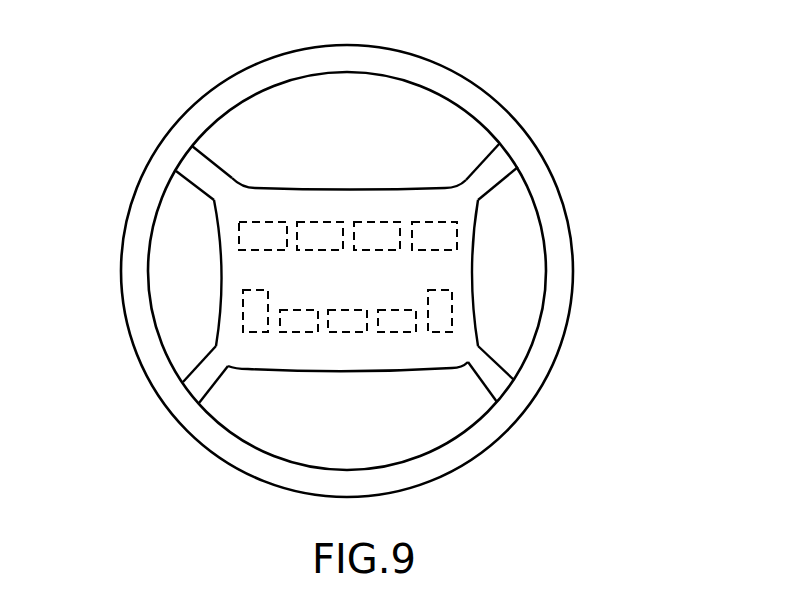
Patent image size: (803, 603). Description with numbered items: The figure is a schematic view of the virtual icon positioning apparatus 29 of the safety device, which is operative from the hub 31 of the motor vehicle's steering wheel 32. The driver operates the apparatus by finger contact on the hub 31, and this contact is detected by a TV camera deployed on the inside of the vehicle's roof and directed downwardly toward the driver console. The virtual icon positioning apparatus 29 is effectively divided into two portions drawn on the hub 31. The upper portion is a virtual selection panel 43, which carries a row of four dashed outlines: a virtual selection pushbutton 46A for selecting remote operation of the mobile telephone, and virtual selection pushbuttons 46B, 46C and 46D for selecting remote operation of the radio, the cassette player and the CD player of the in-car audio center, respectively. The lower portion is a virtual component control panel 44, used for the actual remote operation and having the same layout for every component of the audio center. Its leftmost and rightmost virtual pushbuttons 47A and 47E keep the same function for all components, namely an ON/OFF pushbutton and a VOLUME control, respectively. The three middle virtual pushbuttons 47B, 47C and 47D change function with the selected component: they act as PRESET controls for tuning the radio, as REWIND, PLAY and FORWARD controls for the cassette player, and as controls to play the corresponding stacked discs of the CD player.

The virtual icon positioning apparatus 29 is at (577, 133).
The hub 31 is at (232, 209).
The steering wheel 32 is at (465, 73).
The virtual selection panel 43 is at (290, 176).
The virtual component control panel 44 is at (265, 351).
The virtual selection pushbutton 46A is at (262, 230).
The virtual selection pushbutton 46B is at (318, 230).
The virtual selection pushbutton 46C is at (373, 230).
The virtual selection pushbutton 46D is at (432, 230).
The virtual pushbutton 47A is at (258, 310).
The virtual pushbutton 47B is at (297, 325).
The virtual pushbutton 47C is at (345, 322).
The virtual pushbutton 47D is at (392, 323).
The virtual pushbutton 47E is at (438, 314).